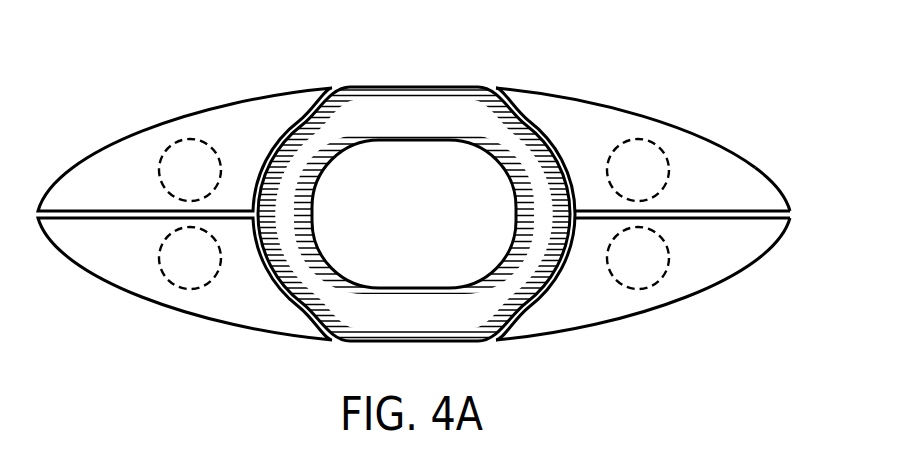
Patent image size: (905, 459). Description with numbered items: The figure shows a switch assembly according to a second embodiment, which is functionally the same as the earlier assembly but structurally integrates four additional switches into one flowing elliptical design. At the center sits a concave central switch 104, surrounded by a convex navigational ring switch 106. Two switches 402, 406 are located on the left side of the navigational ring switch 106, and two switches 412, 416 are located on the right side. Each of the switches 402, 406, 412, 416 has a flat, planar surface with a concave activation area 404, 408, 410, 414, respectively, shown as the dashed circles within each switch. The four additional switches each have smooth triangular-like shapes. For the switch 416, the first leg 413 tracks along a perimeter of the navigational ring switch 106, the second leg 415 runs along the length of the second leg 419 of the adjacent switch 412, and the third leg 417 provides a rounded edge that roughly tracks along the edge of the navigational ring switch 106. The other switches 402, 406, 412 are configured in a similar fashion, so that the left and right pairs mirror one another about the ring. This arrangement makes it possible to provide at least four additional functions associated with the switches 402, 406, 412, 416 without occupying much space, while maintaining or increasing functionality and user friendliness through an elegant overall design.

The concave central switch 104 is at (425, 242).
The convex navigational ring switch 106 is at (408, 115).
The switch 402 is at (235, 128).
The concave activation area 404 is at (182, 168).
The switch 406 is at (115, 252).
The concave activation area 408 is at (200, 268).
The concave activation area 410 is at (642, 267).
The switch 412 is at (745, 237).
The first leg 413 is at (558, 143).
The concave activation area 414 is at (648, 160).
The second leg 415 is at (695, 207).
The switch 416 is at (755, 197).
The third leg 417 is at (618, 110).
The second leg 419 is at (690, 221).